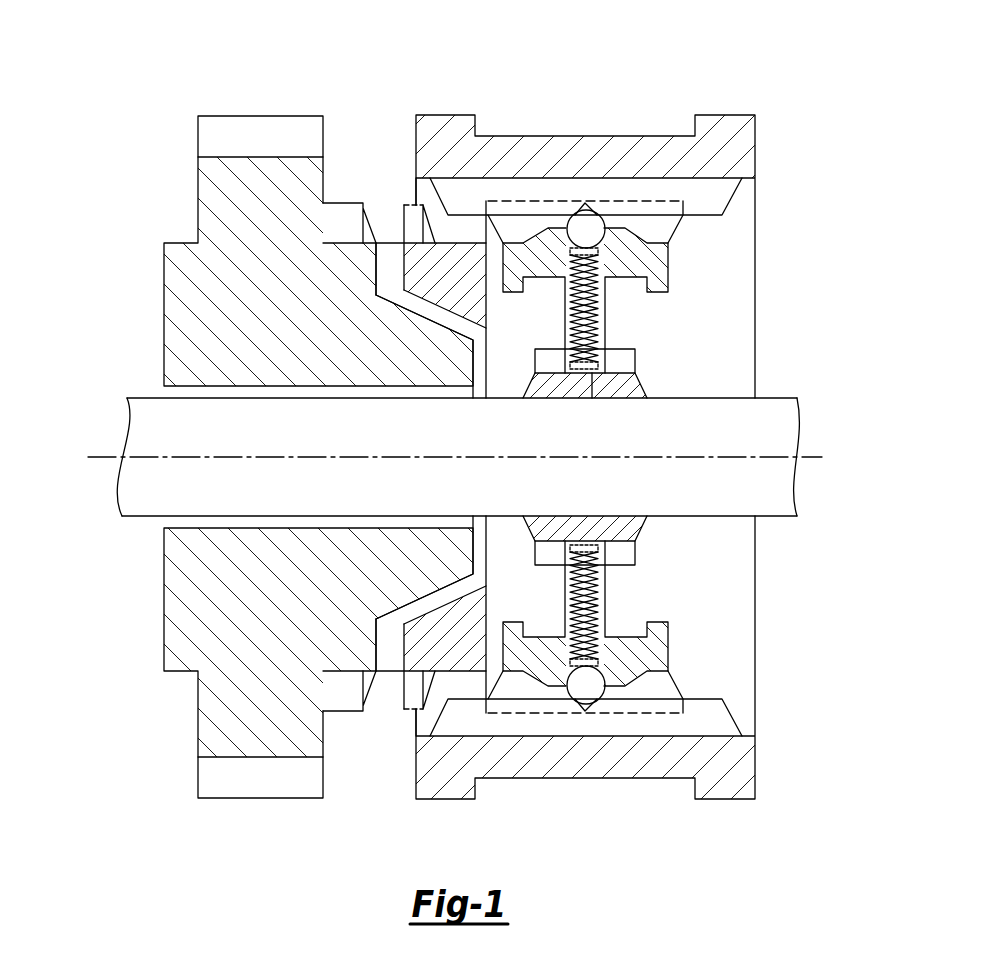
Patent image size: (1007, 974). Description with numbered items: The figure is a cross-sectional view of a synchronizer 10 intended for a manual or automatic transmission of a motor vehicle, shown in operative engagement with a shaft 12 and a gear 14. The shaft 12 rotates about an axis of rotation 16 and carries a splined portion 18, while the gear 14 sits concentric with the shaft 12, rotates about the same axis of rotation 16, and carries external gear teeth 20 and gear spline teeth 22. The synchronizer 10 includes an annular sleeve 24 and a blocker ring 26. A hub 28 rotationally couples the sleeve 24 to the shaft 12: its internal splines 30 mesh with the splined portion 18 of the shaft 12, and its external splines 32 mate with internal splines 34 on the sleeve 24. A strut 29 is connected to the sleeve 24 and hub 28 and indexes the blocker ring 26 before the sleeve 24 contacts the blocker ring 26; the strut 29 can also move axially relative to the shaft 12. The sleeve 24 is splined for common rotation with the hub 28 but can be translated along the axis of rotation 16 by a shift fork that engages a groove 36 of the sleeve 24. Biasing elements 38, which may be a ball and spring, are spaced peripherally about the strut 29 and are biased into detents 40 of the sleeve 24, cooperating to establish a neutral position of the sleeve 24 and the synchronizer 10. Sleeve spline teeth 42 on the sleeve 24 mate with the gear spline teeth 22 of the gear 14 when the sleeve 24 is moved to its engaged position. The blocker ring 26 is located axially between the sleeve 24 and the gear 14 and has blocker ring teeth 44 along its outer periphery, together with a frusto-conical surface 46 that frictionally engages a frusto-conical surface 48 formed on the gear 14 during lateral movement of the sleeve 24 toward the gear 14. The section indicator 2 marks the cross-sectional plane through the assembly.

The section line 2- 2 is at (469, 692).
The synchronizer 10 is at (705, 34).
The shaft 12 is at (151, 396).
The gear 14 is at (197, 199).
The axis of rotation 16 is at (101, 453).
The splined portion 18 is at (549, 390).
The external gear teeth 20 is at (262, 116).
The gear spline teeth 22 is at (343, 203).
The annular sleeve 24 is at (756, 138).
The blocker ring 26 is at (480, 298).
The hub 28 is at (636, 357).
The strut 29 is at (660, 294).
The internal splines 30 is at (593, 387).
The external splines 32 is at (676, 243).
The internal splines 34 is at (674, 224).
The groove 36 is at (623, 136).
The biasing elements 38 is at (590, 601).
The detents 40 is at (577, 703).
The sleeve spline teeth 42 is at (416, 188).
The blocker ring teeth 44 is at (412, 225).
The frusto-conical surface 46 is at (476, 580).
The frusto-conical surface 48 is at (430, 600).